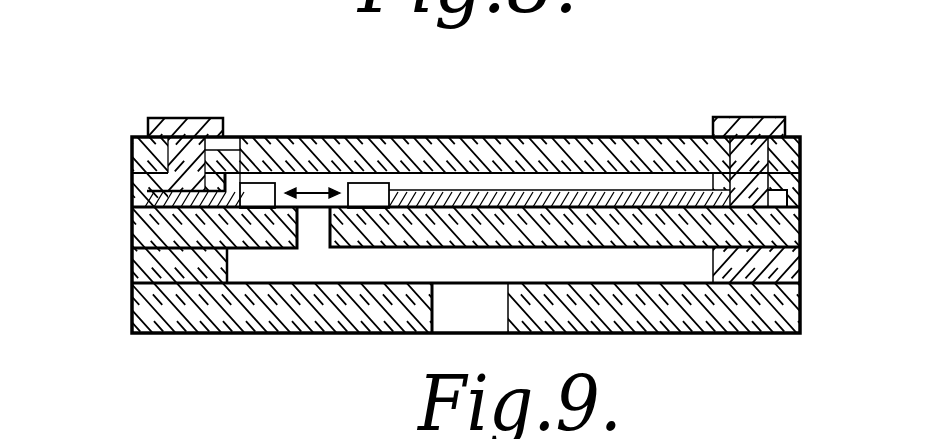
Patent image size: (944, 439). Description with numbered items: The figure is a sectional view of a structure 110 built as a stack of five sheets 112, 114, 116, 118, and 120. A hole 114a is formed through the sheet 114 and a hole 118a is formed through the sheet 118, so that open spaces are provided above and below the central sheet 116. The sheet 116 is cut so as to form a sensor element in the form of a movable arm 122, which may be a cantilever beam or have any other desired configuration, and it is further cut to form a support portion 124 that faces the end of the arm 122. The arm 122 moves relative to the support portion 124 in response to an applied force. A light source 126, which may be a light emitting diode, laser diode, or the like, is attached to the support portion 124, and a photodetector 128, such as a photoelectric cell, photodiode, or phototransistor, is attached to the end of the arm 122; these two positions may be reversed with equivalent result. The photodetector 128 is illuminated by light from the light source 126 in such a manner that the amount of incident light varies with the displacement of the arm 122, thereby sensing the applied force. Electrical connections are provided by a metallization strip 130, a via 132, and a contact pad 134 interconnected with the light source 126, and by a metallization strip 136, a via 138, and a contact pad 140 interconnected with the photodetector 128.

The structure 110 is at (90, 101).
The sheet 112 is at (132, 158).
The sheet 114 is at (132, 190).
The hole 114a is at (234, 154).
The sheet 116 is at (132, 226).
The sheet 118 is at (132, 264).
The hole 118a is at (230, 264).
The sheet 120 is at (131, 312).
The movable arm 122 is at (686, 237).
The support portion 124 is at (283, 227).
The light source 126 is at (260, 194).
The photodetector 128 is at (367, 186).
The metallization strip 130 is at (160, 187).
The via 132 is at (222, 148).
The contact pad 134 is at (185, 119).
The metallization strip 136 is at (527, 190).
The via 138 is at (802, 147).
The contact pad 140 is at (738, 118).